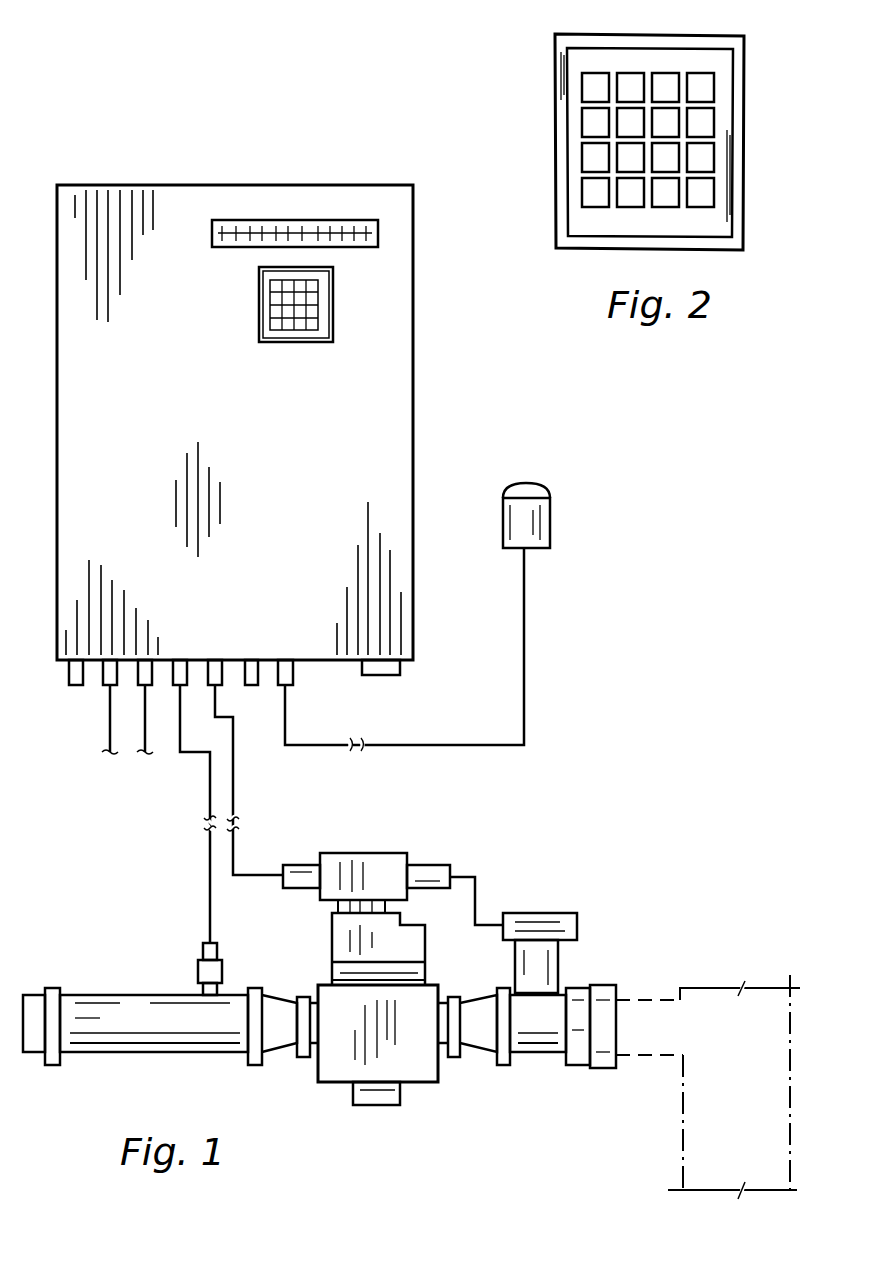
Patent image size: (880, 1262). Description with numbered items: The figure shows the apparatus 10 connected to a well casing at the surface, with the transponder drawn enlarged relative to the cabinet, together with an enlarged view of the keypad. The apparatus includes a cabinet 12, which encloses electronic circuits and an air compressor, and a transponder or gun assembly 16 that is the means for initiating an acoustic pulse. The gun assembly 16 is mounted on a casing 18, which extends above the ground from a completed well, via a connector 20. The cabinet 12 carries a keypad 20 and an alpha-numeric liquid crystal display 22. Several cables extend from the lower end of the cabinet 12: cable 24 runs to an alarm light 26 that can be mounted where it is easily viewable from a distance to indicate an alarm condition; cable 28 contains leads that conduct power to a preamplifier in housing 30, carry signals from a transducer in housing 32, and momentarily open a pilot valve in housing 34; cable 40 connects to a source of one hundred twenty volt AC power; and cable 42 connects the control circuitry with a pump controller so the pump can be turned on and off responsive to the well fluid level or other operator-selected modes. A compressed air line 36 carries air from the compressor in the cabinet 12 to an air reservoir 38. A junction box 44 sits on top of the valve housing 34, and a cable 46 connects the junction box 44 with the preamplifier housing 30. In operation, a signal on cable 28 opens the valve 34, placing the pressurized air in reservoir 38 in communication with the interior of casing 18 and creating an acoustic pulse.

In FIG. 1, the apparatus 10 is at (610, 766).
In FIG. 1, the cabinet 12 is at (413, 353).
In FIG. 1, the gun assembly 16 is at (507, 879).
In FIG. 1, the casing 18 is at (683, 1152).
In FIG. 1, the keypad 20 is at (259, 338).
In FIG. 2, the keypad 20 is at (556, 222).
In FIG. 1, the alpha-numeric liquid crystal display 22 is at (228, 249).
In FIG. 1, the cable 24 is at (438, 744).
In FIG. 1, the alarm light 26 is at (550, 514).
In FIG. 1, the cable 28 is at (236, 786).
In FIG. 1, the housing 30 is at (565, 915).
In FIG. 1, the housing 32 is at (549, 970).
In FIG. 1, the valve housing 34 is at (430, 1065).
In FIG. 1, the compressed air line 36 is at (207, 878).
In FIG. 1, the air reservoir 38 is at (80, 1005).
In FIG. 1, the cable 40 is at (146, 736).
In FIG. 1, the cable 42 is at (108, 718).
In FIG. 1, the junction box 44 is at (375, 863).
In FIG. 1, the cable 46 is at (476, 875).